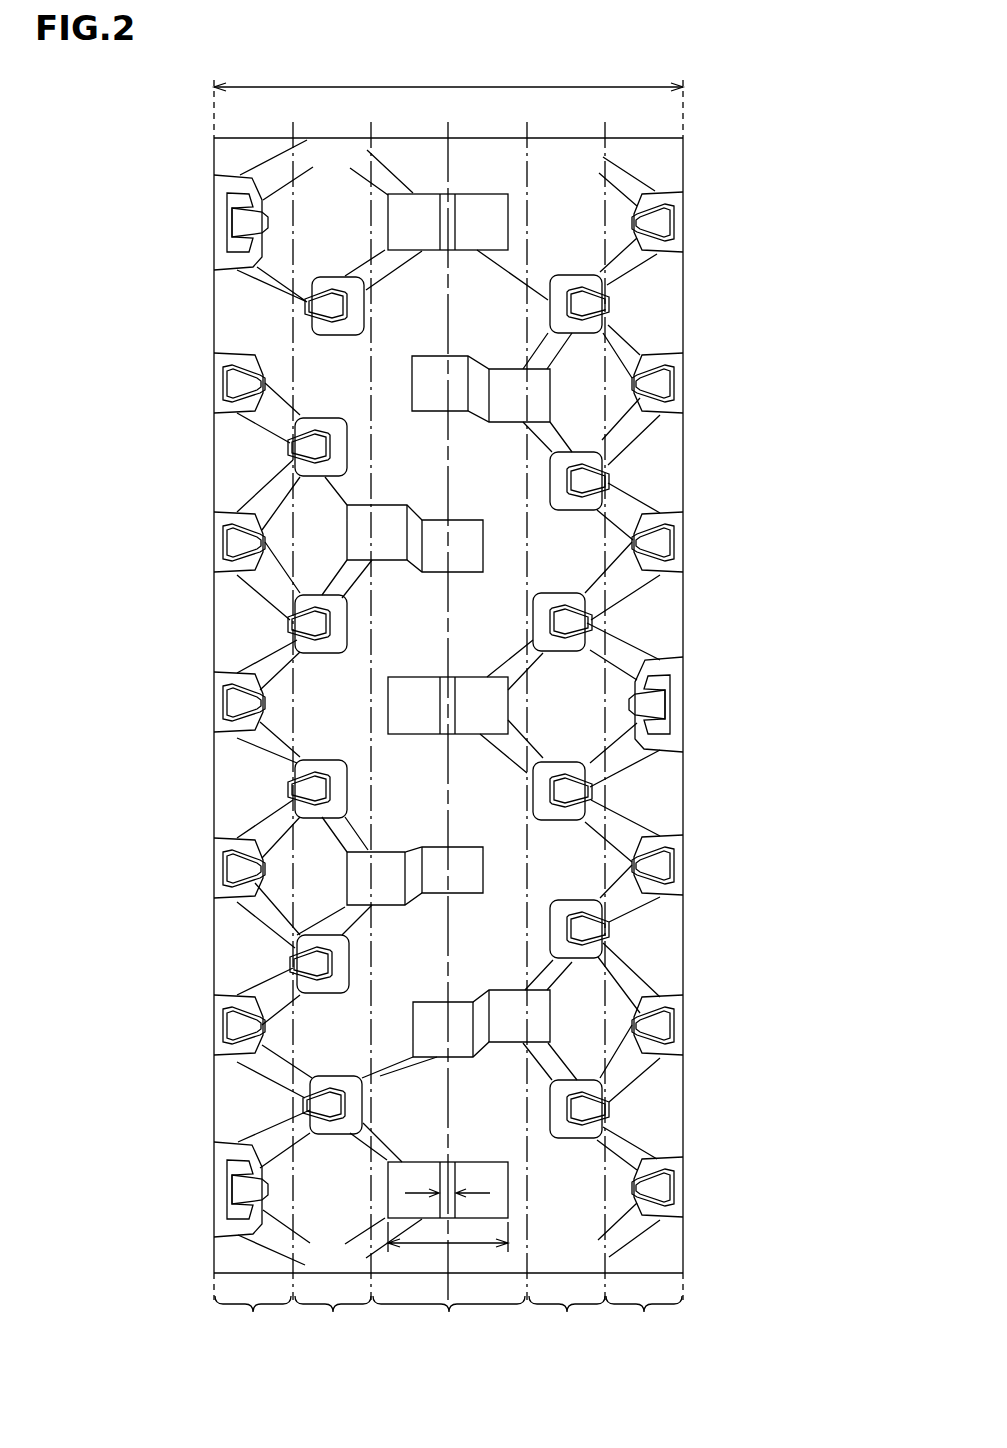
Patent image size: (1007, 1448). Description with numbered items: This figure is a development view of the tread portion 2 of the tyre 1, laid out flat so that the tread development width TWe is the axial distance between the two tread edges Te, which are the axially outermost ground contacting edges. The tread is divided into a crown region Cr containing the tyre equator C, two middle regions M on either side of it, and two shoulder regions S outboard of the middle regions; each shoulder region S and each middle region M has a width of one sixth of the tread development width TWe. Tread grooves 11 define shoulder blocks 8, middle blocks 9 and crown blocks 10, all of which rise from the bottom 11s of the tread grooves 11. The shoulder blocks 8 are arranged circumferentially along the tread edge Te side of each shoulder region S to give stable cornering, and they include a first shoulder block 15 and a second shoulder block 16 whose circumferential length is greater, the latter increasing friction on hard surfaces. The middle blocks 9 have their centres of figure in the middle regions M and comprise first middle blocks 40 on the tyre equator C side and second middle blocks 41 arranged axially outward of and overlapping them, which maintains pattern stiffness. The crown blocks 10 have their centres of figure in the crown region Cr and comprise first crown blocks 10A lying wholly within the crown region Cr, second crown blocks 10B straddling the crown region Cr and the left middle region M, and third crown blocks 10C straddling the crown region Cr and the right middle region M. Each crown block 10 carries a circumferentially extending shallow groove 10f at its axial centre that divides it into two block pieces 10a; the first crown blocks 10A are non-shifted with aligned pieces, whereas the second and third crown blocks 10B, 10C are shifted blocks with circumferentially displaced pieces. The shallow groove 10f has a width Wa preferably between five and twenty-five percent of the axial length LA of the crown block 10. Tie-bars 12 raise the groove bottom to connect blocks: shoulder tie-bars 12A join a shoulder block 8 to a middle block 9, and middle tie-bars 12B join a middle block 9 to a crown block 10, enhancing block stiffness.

The tyre 1 is at (778, 130).
The tread portion 2 is at (705, 142).
The tread edges Te is at (211, 197).
The tread development width TWe is at (448, 74).
The tyre equator C is at (447, 700).
The shoulder blocks 8 is at (670, 522).
The middle blocks 9 is at (573, 810).
The crown blocks 10 is at (413, 705).
The first crown blocks 10A is at (487, 705).
The second crown blocks 10B is at (358, 868).
The third crown blocks 10C is at (535, 1020).
The block pieces 10a is at (448, 261).
The shallow groove 10f is at (455, 243).
The tread grooves 11 is at (232, 461).
The bottom 11s is at (654, 470).
The tie-bars 12 is at (275, 748).
The shoulder tie-bars 12A is at (272, 992).
The middle tie-bars 12B is at (400, 1150).
The first shoulder block 15 is at (670, 407).
The second shoulder block 16 is at (668, 668).
The first middle blocks 40 is at (580, 598).
The second middle blocks 41 is at (587, 955).
The shoulder regions S is at (448, 1325).
The middle regions M is at (450, 1325).
The crown region Cr is at (449, 1325).
The width Wa is at (440, 1197).
The length LA is at (472, 1243).